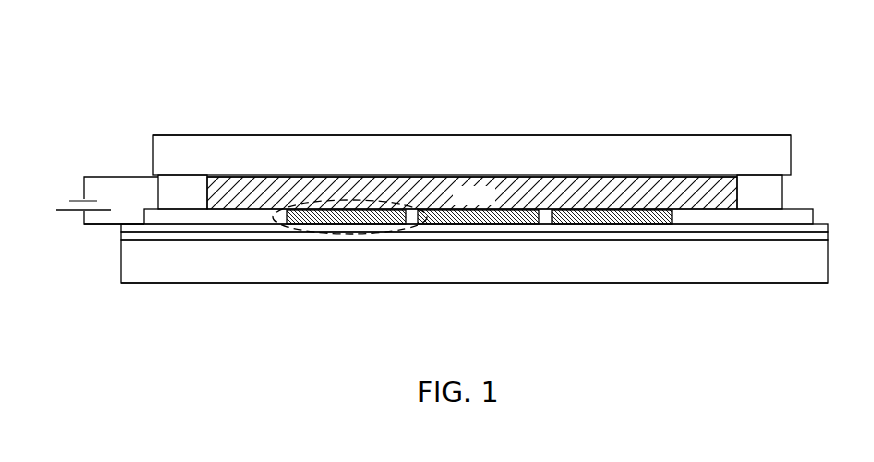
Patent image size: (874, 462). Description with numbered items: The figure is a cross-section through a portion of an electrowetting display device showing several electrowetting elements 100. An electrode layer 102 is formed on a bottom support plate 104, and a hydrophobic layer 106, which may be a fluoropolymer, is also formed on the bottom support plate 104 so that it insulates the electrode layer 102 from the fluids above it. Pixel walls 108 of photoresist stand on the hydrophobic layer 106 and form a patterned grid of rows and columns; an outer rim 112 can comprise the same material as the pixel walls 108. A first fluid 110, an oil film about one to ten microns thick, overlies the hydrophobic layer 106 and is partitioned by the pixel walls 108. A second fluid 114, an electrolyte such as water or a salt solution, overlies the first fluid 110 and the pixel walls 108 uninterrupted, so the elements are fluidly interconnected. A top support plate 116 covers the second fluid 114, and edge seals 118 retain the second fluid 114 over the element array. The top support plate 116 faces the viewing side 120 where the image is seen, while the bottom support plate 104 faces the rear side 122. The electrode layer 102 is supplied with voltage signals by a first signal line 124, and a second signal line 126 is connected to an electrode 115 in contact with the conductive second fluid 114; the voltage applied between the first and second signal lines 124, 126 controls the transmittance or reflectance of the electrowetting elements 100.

The electrowetting element 100 is at (351, 233).
The electrode layer 102 is at (121, 240).
The bottom support plate 104 is at (183, 275).
The hydrophobic layer 106 is at (121, 231).
The pixel walls 108 is at (545, 225).
The first fluid 110 is at (596, 225).
The outer rim 112 is at (755, 225).
The second fluid 114 is at (472, 193).
The electrode 115 is at (606, 188).
The top support plate 116 is at (209, 162).
The edge seals 118 is at (783, 197).
The viewing side 120 is at (307, 95).
The rear side 122 is at (284, 313).
The first signal line 124 is at (84, 223).
The second signal line 126 is at (137, 176).